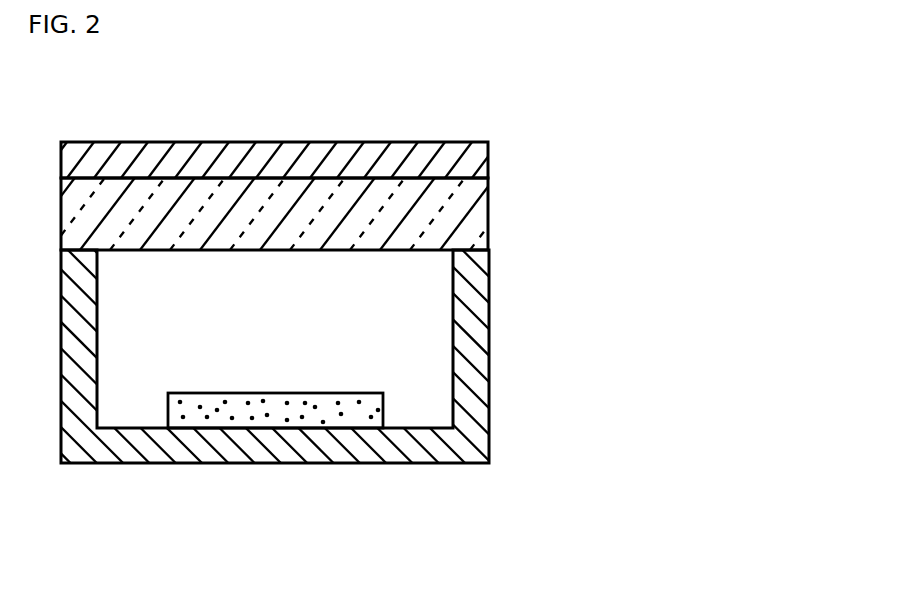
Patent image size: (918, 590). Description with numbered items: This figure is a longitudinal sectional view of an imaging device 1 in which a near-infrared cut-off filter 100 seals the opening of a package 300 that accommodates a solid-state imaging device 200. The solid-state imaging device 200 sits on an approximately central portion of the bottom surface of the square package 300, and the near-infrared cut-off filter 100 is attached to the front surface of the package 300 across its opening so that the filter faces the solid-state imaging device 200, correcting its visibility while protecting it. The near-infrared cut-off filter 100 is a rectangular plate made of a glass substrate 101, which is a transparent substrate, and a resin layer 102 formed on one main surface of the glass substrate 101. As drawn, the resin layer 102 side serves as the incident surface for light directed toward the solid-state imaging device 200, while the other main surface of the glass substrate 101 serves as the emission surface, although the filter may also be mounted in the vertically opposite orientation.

The imaging device 1 is at (702, 431).
The near-infrared cut-off filter 100 is at (364, 186).
The glass substrate 101 is at (488, 208).
The resin layer 102 is at (488, 143).
The solid-state imaging device 200 is at (203, 418).
The package 300 is at (489, 421).